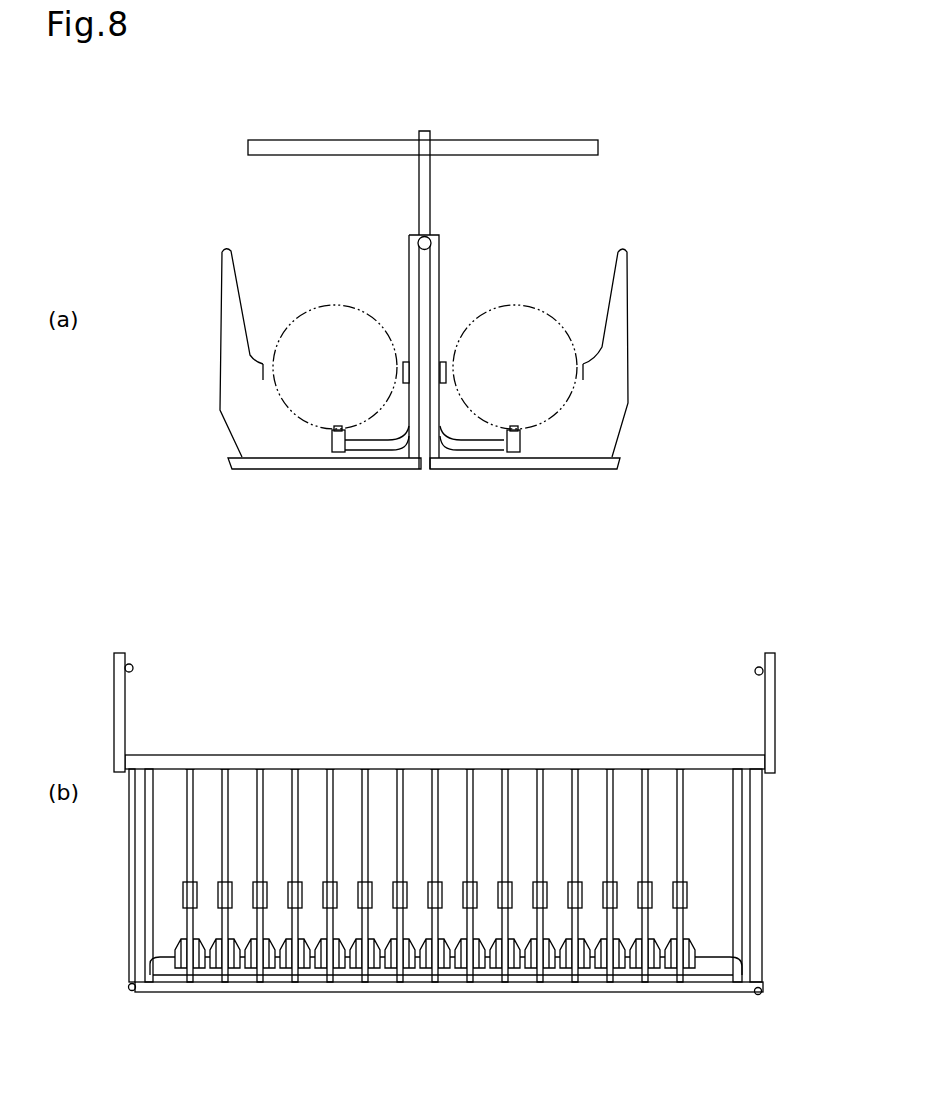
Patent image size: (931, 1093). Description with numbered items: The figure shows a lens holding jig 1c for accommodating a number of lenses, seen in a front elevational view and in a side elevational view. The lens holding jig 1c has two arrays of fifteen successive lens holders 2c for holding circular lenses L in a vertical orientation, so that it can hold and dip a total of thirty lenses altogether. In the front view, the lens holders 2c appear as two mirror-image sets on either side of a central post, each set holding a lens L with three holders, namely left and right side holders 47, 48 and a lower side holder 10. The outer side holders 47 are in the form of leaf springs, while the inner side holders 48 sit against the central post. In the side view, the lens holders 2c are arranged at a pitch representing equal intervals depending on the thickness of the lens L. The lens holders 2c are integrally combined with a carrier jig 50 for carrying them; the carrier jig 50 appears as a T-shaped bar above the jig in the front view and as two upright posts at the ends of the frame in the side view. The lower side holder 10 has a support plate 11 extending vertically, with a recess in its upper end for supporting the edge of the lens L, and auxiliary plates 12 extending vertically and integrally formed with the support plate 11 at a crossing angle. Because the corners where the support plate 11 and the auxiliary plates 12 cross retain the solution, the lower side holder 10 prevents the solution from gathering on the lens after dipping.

The carrier jig 50 is at (557, 127).
The lens holding jig 1c is at (660, 190).
The lens holder 2c is at (205, 313).
The outer side holder 47 is at (263, 364).
The inner side holder 48 is at (400, 363).
The lens L is at (346, 318).
The lower side holder 10 is at (340, 453).
The support plate 11 is at (332, 440).
The auxiliary plate 12 is at (673, 957).